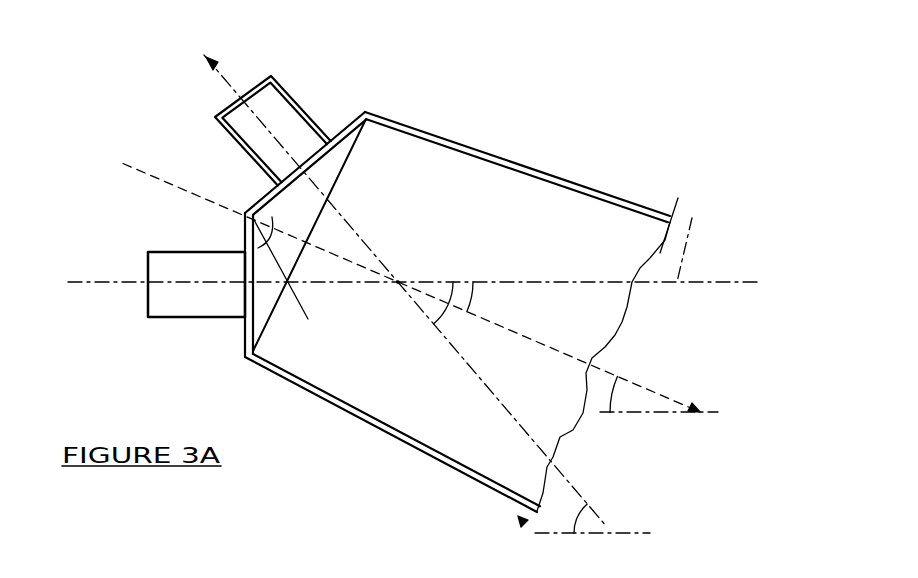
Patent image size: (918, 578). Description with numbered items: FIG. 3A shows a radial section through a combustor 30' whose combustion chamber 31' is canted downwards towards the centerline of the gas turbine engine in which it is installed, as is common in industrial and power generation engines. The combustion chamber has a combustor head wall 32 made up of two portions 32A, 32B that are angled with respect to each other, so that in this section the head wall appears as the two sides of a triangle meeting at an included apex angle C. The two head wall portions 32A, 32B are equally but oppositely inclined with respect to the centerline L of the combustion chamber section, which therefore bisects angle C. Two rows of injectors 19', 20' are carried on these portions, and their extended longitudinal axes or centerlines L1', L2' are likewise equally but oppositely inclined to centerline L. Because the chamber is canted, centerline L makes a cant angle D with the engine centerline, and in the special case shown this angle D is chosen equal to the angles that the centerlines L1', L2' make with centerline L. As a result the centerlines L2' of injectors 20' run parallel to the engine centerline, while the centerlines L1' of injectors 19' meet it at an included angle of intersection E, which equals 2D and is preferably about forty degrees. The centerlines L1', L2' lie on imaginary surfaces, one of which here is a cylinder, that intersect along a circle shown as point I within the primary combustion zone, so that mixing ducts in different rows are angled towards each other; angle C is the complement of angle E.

The combustor 30' is at (407, 280).
The combustion chamber 31' is at (524, 166).
The combustor head wall 32 is at (322, 132).
The head wall portion 32A is at (216, 200).
The head wall portion 32B is at (242, 337).
The injector 19' is at (282, 99).
The injector 20' is at (140, 293).
The point of intersection I is at (415, 243).
The apex angle C is at (308, 319).
The cant angle D is at (578, 369).
The included angle of intersection E is at (476, 324).
The centerline of the combustion chamber section L is at (431, 288).
The angle of intersection 2D is at (638, 506).
The injector centerline L1' is at (357, 291).
The injector centerline L2' is at (711, 241).